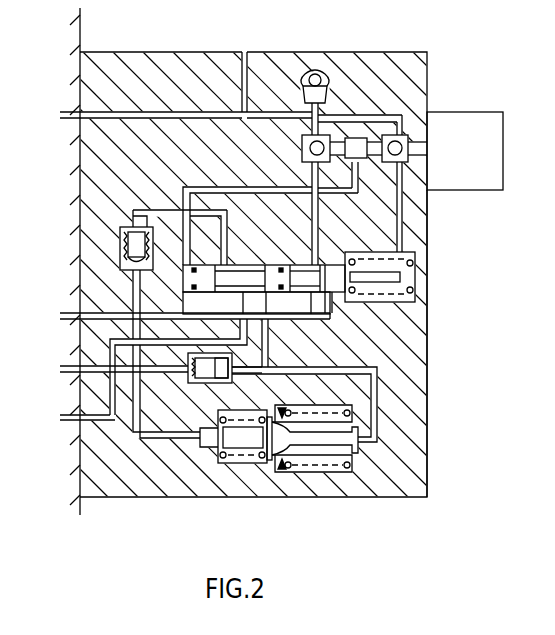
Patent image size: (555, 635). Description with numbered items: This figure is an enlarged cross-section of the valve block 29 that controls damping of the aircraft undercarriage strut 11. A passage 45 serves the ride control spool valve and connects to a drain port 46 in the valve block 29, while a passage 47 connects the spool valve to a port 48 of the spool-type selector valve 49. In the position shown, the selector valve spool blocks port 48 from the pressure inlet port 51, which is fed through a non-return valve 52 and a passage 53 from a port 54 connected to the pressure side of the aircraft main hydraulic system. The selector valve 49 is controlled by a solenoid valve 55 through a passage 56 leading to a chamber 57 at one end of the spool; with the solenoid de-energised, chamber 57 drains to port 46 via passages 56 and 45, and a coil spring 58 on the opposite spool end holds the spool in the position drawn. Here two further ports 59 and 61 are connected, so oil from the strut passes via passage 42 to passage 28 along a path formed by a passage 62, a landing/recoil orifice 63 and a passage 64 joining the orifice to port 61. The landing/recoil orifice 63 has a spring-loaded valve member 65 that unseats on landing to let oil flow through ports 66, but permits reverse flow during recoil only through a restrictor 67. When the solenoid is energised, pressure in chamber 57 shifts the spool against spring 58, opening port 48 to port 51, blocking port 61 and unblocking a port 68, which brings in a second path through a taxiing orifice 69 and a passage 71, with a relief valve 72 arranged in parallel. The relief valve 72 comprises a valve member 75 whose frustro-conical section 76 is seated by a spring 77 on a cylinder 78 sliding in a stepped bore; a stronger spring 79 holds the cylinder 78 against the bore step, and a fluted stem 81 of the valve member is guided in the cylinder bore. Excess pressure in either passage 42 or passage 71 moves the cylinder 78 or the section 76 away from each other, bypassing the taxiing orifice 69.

The strut 11 is at (84, 33).
The passage 28 is at (80, 416).
The valve block 29 is at (428, 395).
The passage 42 is at (80, 362).
The passage 45 is at (80, 90).
The drain port 46 is at (244, 52).
The passage 47 is at (326, 320).
The port 48 is at (334, 298).
The spool-type selector valve 49 is at (428, 320).
The pressure inlet port 51 is at (316, 265).
The non-return valve 52 is at (320, 72).
The passage 53 is at (309, 174).
The port 54 is at (313, 72).
The solenoid valve 55 is at (463, 192).
The passage 56 is at (197, 190).
The chamber 57 is at (186, 292).
The coil spring 58 is at (418, 264).
The port 59 is at (240, 295).
The port 61 is at (232, 265).
The passage 62 is at (130, 405).
The landing/recoil orifice 63 is at (112, 237).
The passage 64 is at (148, 210).
The spring-loaded valve member 65 is at (118, 247).
The ports 66 is at (124, 258).
The restrictor 67 is at (135, 285).
The port 68 is at (276, 293).
The taxiing orifice 69 is at (210, 385).
The passage 71 is at (269, 356).
The relief valve 72 is at (328, 472).
The valve member 75 is at (245, 440).
The frustro-conical section 76 is at (270, 440).
The spring 77 is at (218, 432).
The cylinder 78 is at (278, 465).
The spring 79 is at (350, 467).
The fluted stem 81 is at (338, 476).